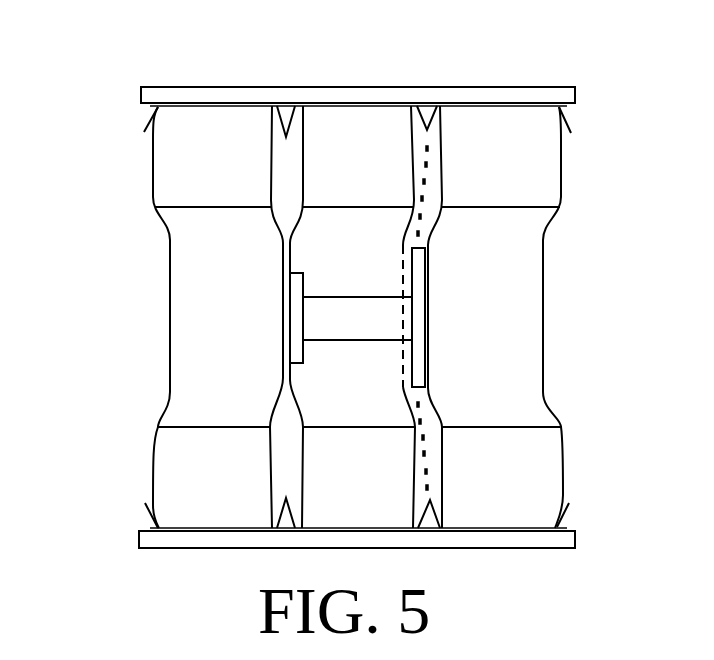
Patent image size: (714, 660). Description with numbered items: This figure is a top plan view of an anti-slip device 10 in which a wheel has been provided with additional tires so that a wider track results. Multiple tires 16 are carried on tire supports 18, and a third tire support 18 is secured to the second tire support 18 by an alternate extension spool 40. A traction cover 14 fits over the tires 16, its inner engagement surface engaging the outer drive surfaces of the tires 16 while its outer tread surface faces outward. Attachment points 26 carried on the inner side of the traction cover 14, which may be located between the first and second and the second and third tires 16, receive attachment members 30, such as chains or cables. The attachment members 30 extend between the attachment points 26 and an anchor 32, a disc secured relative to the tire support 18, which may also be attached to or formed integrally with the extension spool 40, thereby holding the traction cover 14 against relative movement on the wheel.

The anti-slip device 10 is at (92, 181).
The traction cover 14 is at (563, 122).
The tire 16 is at (532, 159).
The tire support 18 is at (515, 380).
The attachment points 26 is at (277, 118).
The attachment member 30 is at (432, 462).
The anchor 32 is at (420, 345).
The extension spool 40 is at (370, 320).